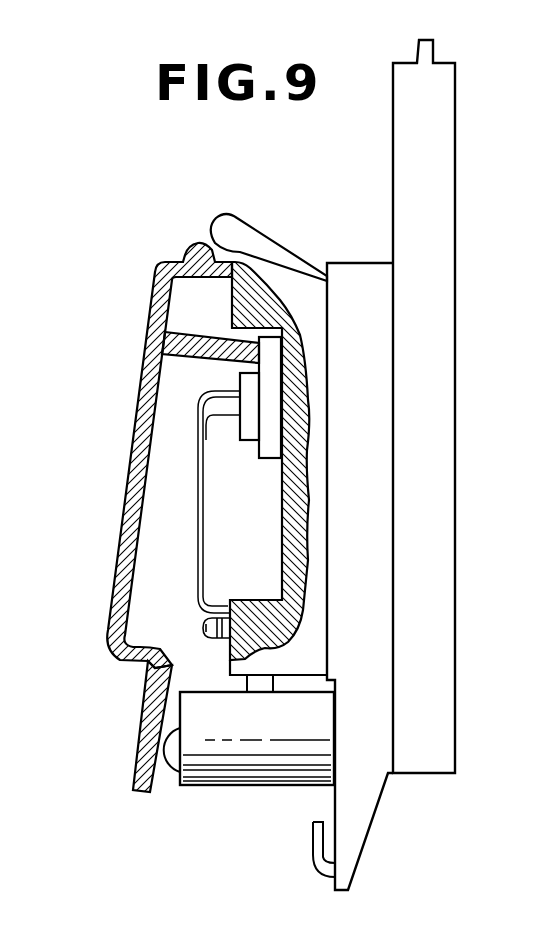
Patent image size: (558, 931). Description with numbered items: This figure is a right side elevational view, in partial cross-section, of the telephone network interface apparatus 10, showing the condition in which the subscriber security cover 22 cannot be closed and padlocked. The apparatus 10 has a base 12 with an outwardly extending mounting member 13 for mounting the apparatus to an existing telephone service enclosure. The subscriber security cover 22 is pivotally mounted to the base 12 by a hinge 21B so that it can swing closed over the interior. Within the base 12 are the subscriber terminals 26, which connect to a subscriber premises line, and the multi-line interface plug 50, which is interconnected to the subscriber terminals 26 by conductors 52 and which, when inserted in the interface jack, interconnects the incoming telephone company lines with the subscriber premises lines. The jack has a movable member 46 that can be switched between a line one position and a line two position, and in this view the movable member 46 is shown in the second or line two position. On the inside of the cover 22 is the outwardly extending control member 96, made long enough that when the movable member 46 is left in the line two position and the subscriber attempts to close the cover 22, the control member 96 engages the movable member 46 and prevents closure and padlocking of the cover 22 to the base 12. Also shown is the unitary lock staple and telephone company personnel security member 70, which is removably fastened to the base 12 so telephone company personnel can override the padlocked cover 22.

The telephone network interface apparatus 10 is at (171, 232).
The base 12 is at (360, 313).
The mounting member 13 is at (432, 183).
The hinge 21B is at (222, 228).
The subscriber security cover 22 is at (135, 438).
The subscriber terminals 26 is at (205, 622).
The movable member 46 is at (257, 343).
The multi-line interface plug 50 is at (240, 378).
The conductors 52 is at (195, 533).
The unitary lock staple and telephone company personnel security member 70 is at (228, 786).
The outwardly extending control member 96 is at (212, 372).